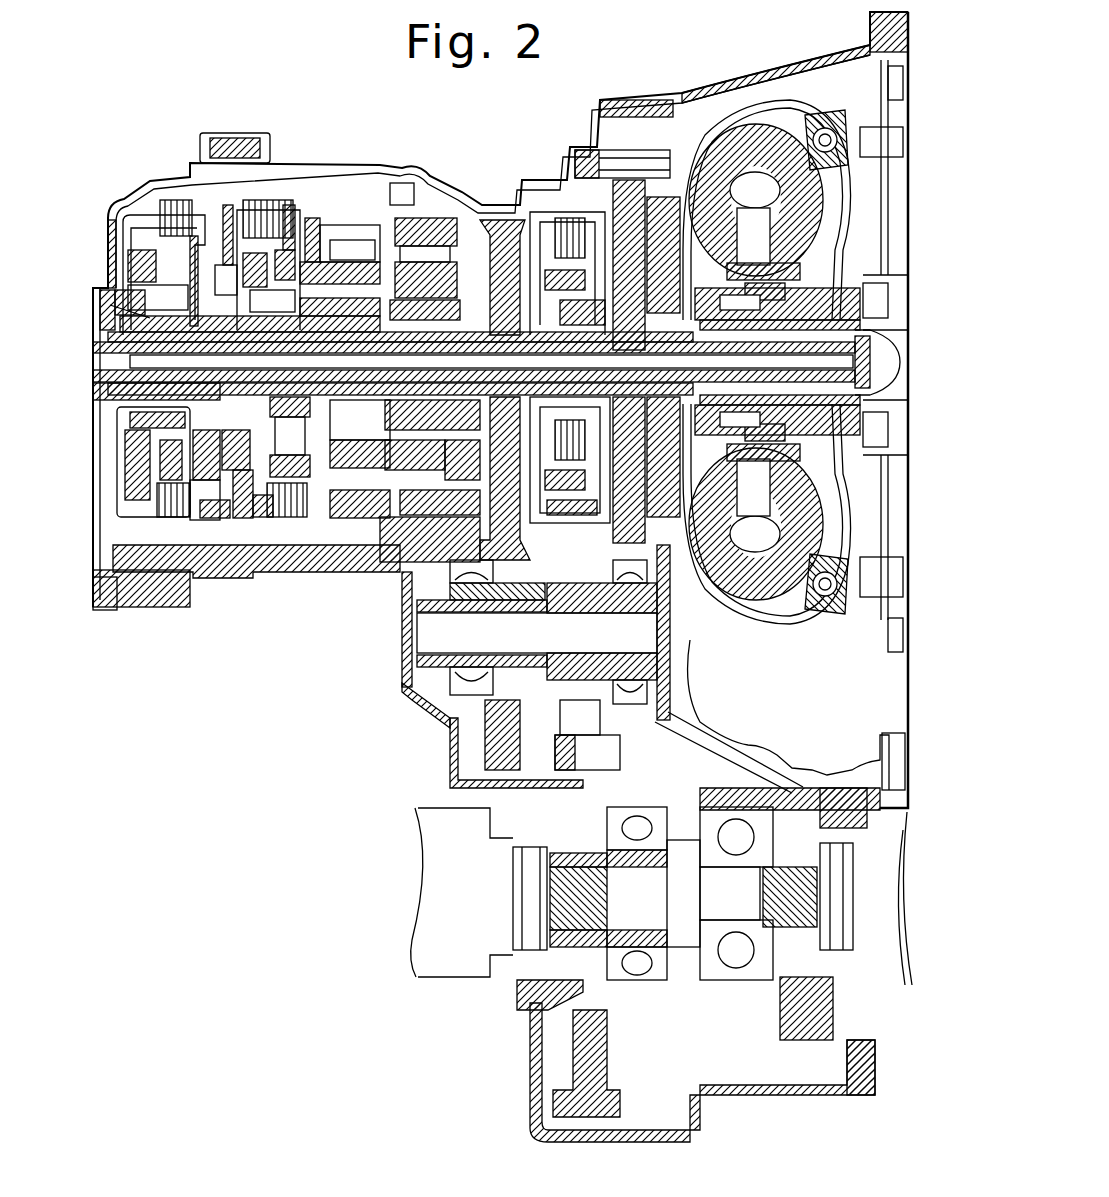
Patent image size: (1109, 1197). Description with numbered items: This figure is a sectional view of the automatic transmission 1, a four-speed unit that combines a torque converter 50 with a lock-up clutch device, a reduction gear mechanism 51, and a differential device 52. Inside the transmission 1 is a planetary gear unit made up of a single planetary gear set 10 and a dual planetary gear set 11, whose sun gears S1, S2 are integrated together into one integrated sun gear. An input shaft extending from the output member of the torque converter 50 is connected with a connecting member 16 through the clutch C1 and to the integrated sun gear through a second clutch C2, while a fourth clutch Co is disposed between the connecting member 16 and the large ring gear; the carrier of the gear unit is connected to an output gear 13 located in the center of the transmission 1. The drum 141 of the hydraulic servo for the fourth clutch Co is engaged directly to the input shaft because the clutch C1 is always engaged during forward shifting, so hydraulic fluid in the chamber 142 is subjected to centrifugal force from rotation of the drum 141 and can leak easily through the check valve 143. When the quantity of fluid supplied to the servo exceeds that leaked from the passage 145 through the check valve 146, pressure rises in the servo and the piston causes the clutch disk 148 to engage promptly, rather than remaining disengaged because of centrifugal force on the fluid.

The automatic transmission 1 is at (117, 188).
The clutch C1 is at (165, 205).
The second clutch C2 is at (540, 230).
The fourth clutch Co is at (310, 205).
The single planetary gear set 10 is at (322, 232).
The dual planetary gear set 11 is at (385, 225).
The output gear 13 is at (510, 235).
The connecting member 16 is at (243, 212).
The torque converter 50 is at (766, 90).
The reduction gear mechanism 51 is at (408, 688).
The differential device 52 is at (570, 978).
The drum 141 is at (292, 205).
The chamber 142 is at (137, 300).
The check valve 143 is at (212, 520).
The passage 145 is at (232, 520).
The check valve 146 is at (200, 525).
The clutch disk 148 is at (252, 515).
The sun gear S1 is at (300, 458).
The sun gear S2 is at (360, 459).